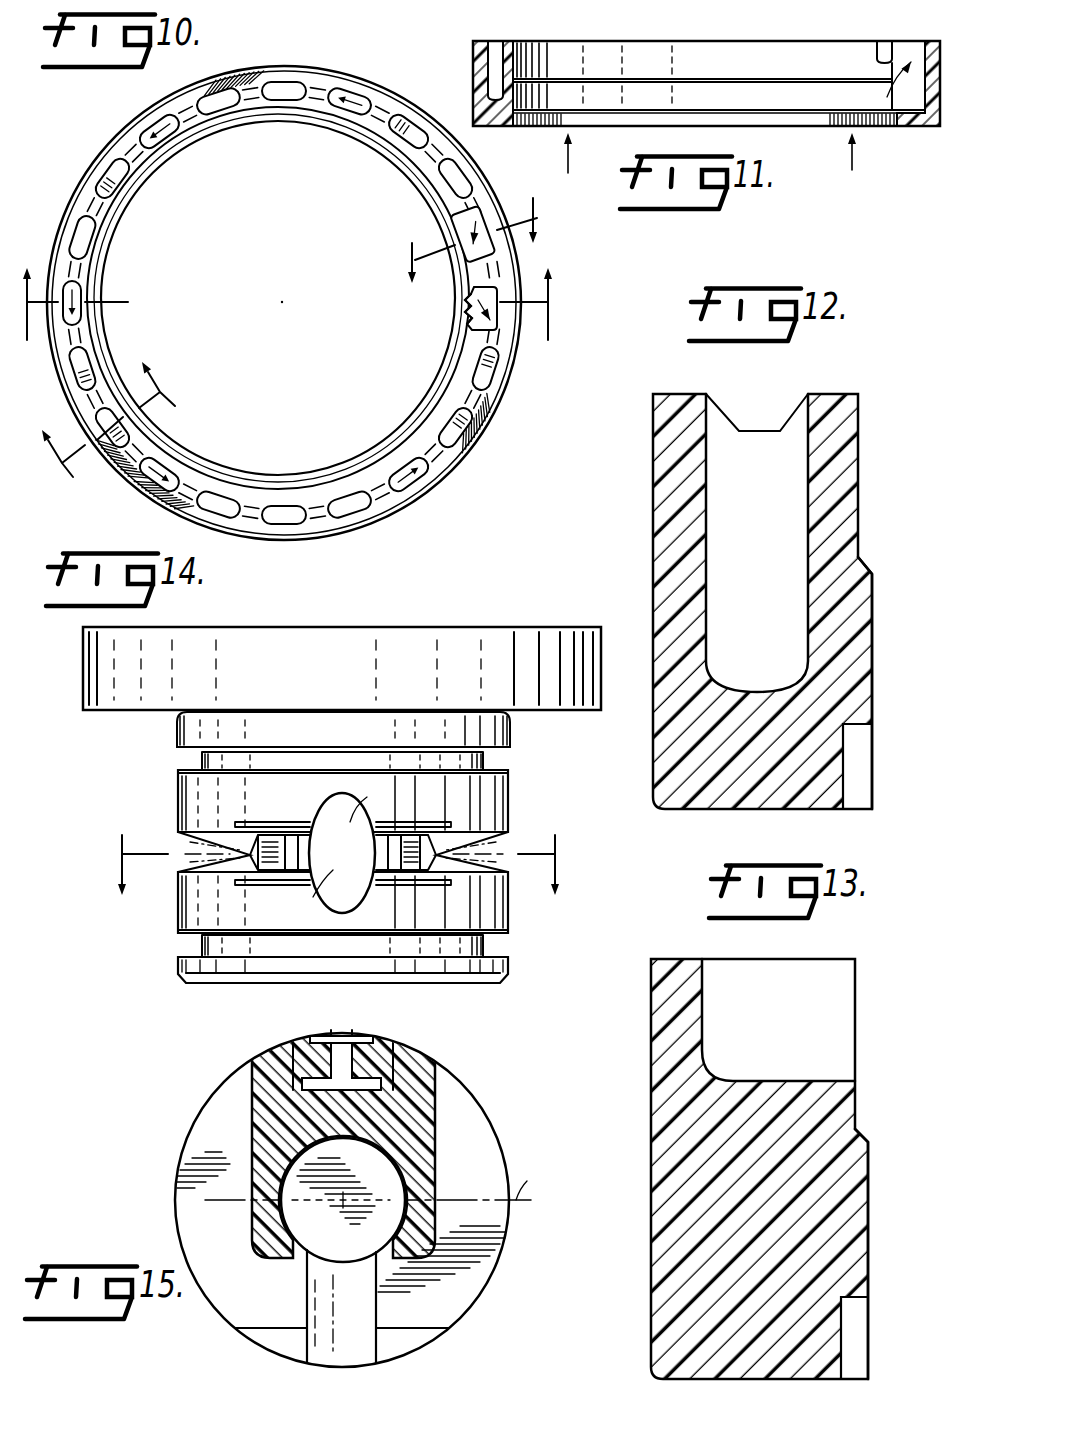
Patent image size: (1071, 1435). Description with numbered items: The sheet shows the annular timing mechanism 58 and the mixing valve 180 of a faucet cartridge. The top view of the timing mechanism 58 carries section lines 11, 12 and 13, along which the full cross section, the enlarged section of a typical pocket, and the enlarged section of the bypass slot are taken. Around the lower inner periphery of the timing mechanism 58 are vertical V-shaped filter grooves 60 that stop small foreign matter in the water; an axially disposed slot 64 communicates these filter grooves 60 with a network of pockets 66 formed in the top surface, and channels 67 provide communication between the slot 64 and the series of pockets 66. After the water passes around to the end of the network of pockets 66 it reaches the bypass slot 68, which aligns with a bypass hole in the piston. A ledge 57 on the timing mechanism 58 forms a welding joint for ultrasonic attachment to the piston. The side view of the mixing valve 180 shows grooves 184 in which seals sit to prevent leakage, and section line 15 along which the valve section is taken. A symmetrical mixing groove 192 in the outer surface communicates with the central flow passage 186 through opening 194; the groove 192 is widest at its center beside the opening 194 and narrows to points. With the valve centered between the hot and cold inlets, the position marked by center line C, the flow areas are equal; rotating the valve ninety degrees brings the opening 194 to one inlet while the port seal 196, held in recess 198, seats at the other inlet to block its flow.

In FIG. 10, the section line 11— 11 is at (289, 320).
In FIG. 10, the section line 12— 12 is at (119, 432).
In FIG. 10, the section line 13— 13 is at (468, 225).
In FIG. 14, the section line 15— 15 is at (338, 850).
In FIG. 10, the ledge 57 is at (407, 435).
In FIG. 11, the ledge 57 is at (650, 103).
In FIG. 12, the ledge 57 is at (873, 661).
In FIG. 13, the ledge 57 is at (870, 1222).
In FIG. 10, the timing mechanism 58 is at (498, 405).
In FIG. 11, the timing mechanism 58 is at (920, 127).
In FIG. 12, the timing mechanism 58 is at (660, 520).
In FIG. 13, the timing mechanism 58 is at (649, 1171).
In FIG. 10, the filter grooves 60 is at (463, 310).
In FIG. 11, the filter grooves 60 is at (837, 123).
In FIG. 12, the filter grooves 60 is at (865, 766).
In FIG. 13, the filter grooves 60 is at (855, 1331).
In FIG. 10, the slot 64 is at (492, 298).
In FIG. 11, the slot 64 is at (910, 45).
In FIG. 10, the pockets 66 is at (422, 467).
In FIG. 11, the pockets 66 is at (493, 43).
In FIG. 12, the pockets 66 is at (757, 543).
In FIG. 10, the channels 67 is at (480, 337).
In FIG. 12, the channels 67 is at (730, 413).
In FIG. 10, the bypass slot 68 is at (473, 253).
In FIG. 11, the bypass slot 68 is at (883, 43).
In FIG. 13, the bypass slot 68 is at (843, 1005).
In FIG. 14, the mixing valve 180 is at (336, 625).
In FIG. 15, the mixing valve 180 is at (500, 1269).
In FIG. 14, the grooves 184 is at (192, 758).
In FIG. 15, the flow passage 186 is at (343, 1200).
In FIG. 14, the mixing groove 192 is at (182, 862).
In FIG. 15, the mixing groove 192 is at (212, 1187).
In FIG. 14, the opening 194 is at (342, 853).
In FIG. 15, the opening 194 is at (325, 1348).
In FIG. 15, the port seal 196 is at (398, 1017).
In FIG. 15, the recess 198 is at (305, 1036).
In FIG. 15, the center line C is at (533, 1184).